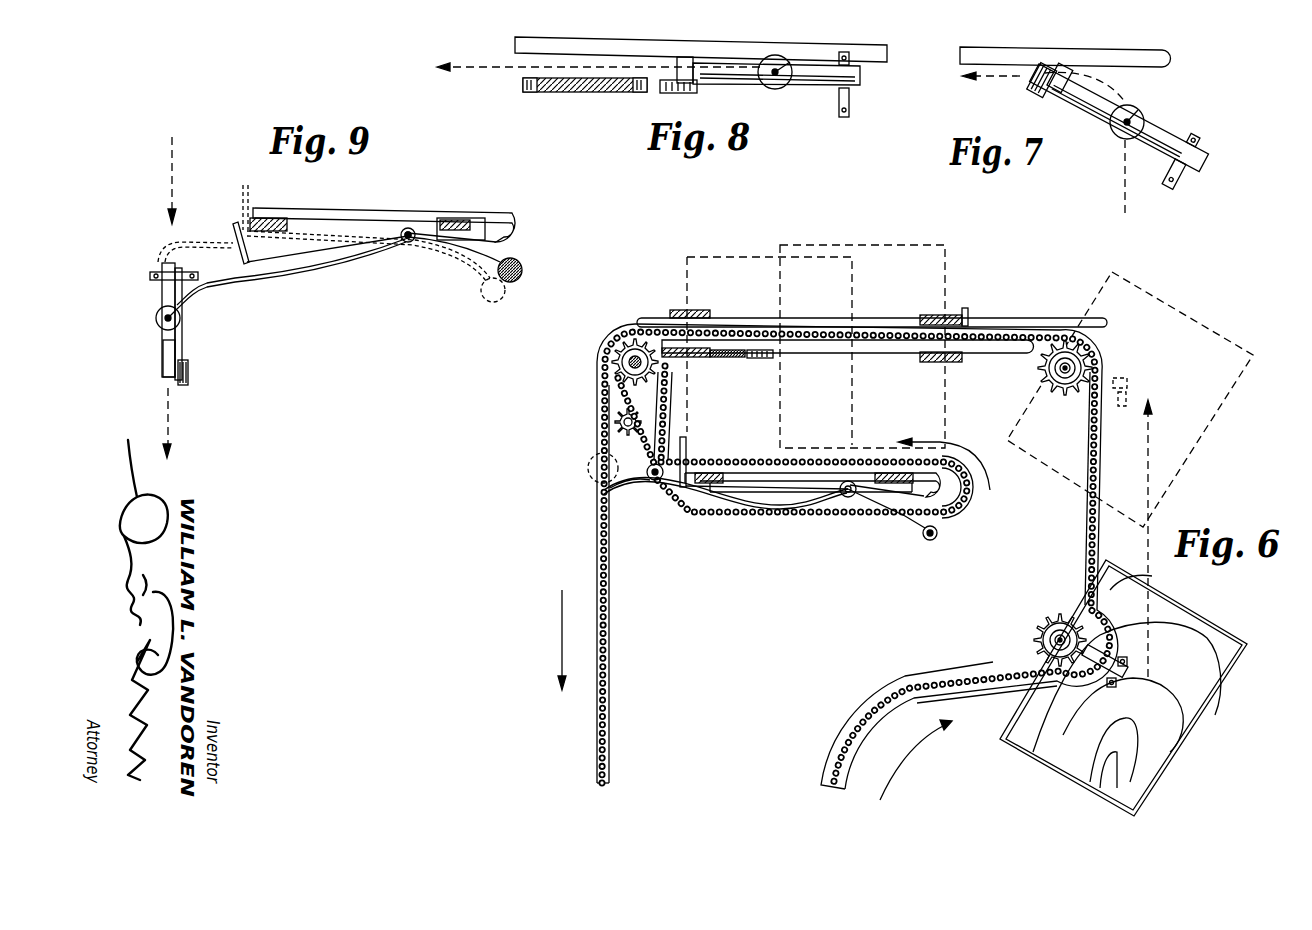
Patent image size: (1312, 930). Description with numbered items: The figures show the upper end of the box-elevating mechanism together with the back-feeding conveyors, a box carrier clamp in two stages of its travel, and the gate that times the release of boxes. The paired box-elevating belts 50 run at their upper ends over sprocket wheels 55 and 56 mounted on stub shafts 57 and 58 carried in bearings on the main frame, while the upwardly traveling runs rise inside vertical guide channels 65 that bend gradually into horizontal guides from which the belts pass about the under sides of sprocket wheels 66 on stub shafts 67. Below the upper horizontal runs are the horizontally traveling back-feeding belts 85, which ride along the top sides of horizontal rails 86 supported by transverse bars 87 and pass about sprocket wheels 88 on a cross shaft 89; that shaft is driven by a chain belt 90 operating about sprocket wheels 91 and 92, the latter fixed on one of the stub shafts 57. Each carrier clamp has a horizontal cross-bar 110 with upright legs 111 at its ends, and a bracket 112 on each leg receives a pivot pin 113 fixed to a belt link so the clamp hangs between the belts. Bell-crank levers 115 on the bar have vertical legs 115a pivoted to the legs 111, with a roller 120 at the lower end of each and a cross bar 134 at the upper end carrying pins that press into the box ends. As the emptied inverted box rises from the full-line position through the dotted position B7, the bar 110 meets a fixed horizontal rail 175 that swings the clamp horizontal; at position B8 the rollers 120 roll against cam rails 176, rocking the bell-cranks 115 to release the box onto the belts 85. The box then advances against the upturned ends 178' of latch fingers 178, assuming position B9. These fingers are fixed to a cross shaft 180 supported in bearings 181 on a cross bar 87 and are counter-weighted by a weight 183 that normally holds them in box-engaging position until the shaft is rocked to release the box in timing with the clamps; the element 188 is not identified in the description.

In FIG. 6, the box-elevating belt 50 is at (607, 676).
In FIG. 6, the sprocket wheel 55 is at (668, 370).
In FIG. 6, the sprocket wheel 56 is at (1045, 376).
In FIG. 6, the stub shaft 57 is at (598, 368).
In FIG. 6, the stub shaft 58 is at (1072, 368).
In FIG. 6, the vertical guide channel 65 is at (880, 688).
In FIG. 6, the sprocket wheel 66 is at (1050, 622).
In FIG. 6, the stub shaft 67 is at (1040, 643).
In FIG. 6, the back-feeding conveyor belt 85 is at (800, 462).
In FIG. 9, the horizontal rail 86 is at (355, 210).
In FIG. 6, the horizontal rail 86 is at (850, 472).
In FIG. 9, the transverse bar 87 is at (455, 222).
In FIG. 6, the transverse bar 87 is at (715, 485).
In FIG. 6, the sprocket wheel 88 is at (665, 481).
In FIG. 6, the cross shaft 89 is at (648, 480).
In FIG. 6, the chain belt 90 is at (670, 410).
In FIG. 6, the sprocket wheel 91 is at (598, 460).
In FIG. 6, the sprocket wheel 92 is at (620, 412).
In FIG. 8, the cross-bar 110 is at (688, 62).
In FIG. 7, the cross-bar 110 is at (1060, 78).
In FIG. 9, the cross-bar 110 is at (163, 368).
In FIG. 8, the leg 111 is at (815, 66).
In FIG. 7, the leg 111 is at (1158, 128).
In FIG. 9, the leg 111 is at (162, 292).
In FIG. 6, the leg 111 is at (1112, 658).
In FIG. 8, the bracket 112 is at (782, 82).
In FIG. 7, the bracket 112 is at (1120, 112).
In FIG. 9, the bracket 112 is at (160, 330).
In FIG. 8, the pivot pin 113 is at (775, 55).
In FIG. 7, the pivot pin 113 is at (1130, 118).
In FIG. 9, the pivot pin 113 is at (156, 318).
In FIG. 7, the bell-crank lever 115 is at (1088, 128).
In FIG. 8, the vertically extending leg 115a is at (800, 85).
In FIG. 8, the roller 120 is at (700, 92).
In FIG. 7, the roller 120 is at (1025, 102).
In FIG. 9, the roller 120 is at (190, 375).
In FIG. 8, the cross bar 134 is at (850, 103).
In FIG. 7, the cross bar 134 is at (1200, 135).
In FIG. 9, the cross bar 134 is at (150, 272).
In FIG. 6, the cross bar 134 is at (1130, 661).
In FIG. 8, the horizontal rail 175 is at (582, 44).
In FIG. 7, the horizontal rail 175 is at (993, 52).
In FIG. 6, the horizontal rail 175 is at (1073, 333).
In FIG. 8, the cam rail 176 is at (572, 92).
In FIG. 6, the cam rail 176 is at (735, 357).
In FIG. 9, the latch finger 178 is at (376, 272).
In FIG. 6, the latch finger 178 is at (805, 526).
In FIG. 9, the upturned end 178' is at (221, 224).
In FIG. 6, the upturned end 178' is at (710, 456).
In FIG. 9, the cross shaft 180 is at (403, 242).
In FIG. 6, the cross shaft 180 is at (850, 500).
In FIG. 9, the bearing 181 is at (412, 242).
In FIG. 6, the bearing 181 is at (860, 495).
In FIG. 9, the weight 183 is at (522, 270).
In FIG. 6, the weight 183 is at (937, 535).
In FIG. 9, the wire spring 188 is at (228, 290).
In FIG. 6, the wire spring 188 is at (604, 508).
In FIG. 6, the dotted-line box position B7 is at (1222, 337).
In FIG. 6, the box release position B8 is at (950, 263).
In FIG. 6, the stopped box position B9 is at (688, 271).